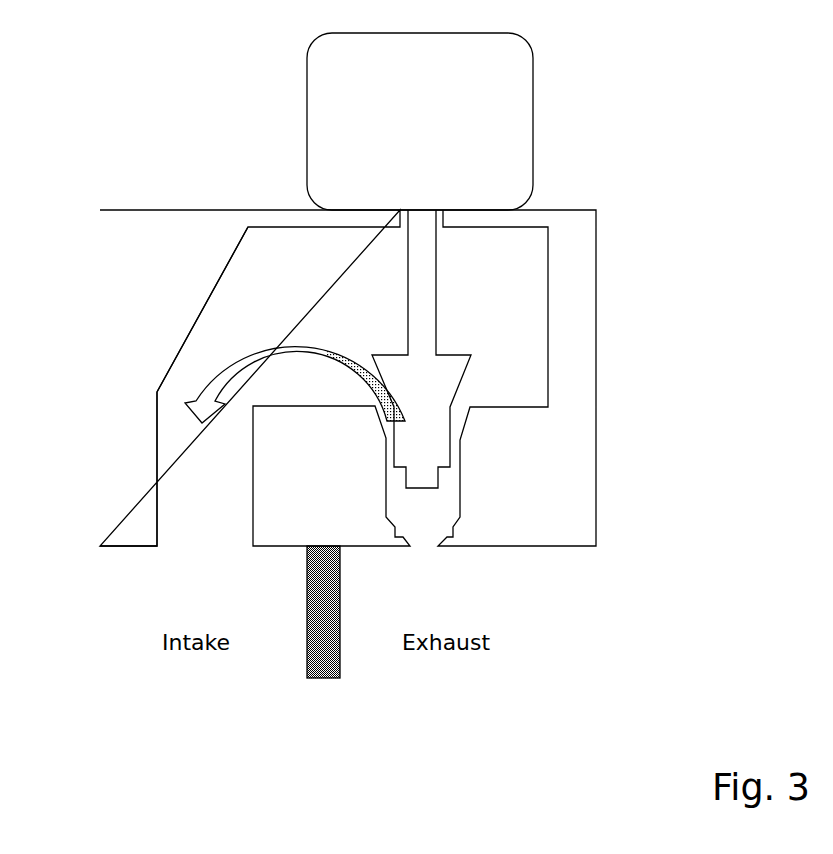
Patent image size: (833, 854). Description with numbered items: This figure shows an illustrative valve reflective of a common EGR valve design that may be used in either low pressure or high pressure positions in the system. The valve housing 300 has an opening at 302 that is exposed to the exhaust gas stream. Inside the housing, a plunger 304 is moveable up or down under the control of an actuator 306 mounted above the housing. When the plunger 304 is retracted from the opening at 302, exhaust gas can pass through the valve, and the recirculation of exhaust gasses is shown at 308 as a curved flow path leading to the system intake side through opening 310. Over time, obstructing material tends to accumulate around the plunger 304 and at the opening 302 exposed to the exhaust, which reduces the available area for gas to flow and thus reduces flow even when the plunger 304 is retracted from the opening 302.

The valve housing 300 is at (587, 497).
The opening exposed to the exhaust gas stream 302 is at (422, 543).
The plunger 304 is at (448, 385).
The actuator 306 is at (499, 128).
The recirculation of exhaust gasses 308 is at (327, 350).
The opening to the system intake side 310 is at (192, 540).